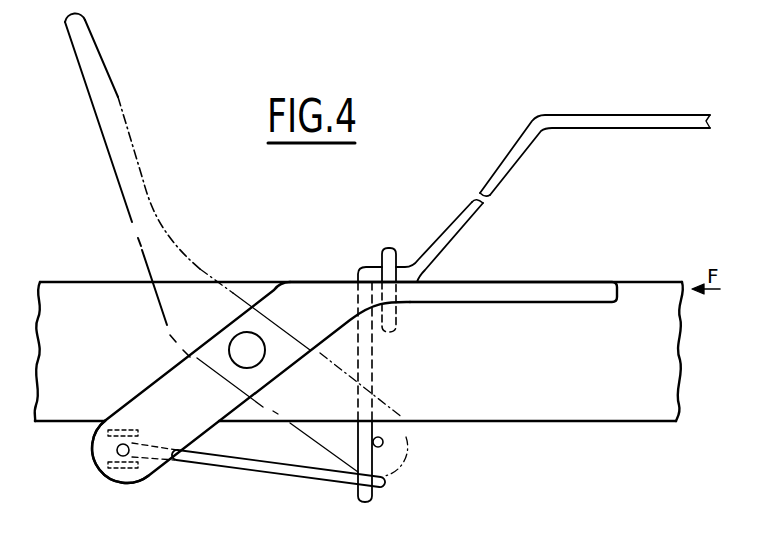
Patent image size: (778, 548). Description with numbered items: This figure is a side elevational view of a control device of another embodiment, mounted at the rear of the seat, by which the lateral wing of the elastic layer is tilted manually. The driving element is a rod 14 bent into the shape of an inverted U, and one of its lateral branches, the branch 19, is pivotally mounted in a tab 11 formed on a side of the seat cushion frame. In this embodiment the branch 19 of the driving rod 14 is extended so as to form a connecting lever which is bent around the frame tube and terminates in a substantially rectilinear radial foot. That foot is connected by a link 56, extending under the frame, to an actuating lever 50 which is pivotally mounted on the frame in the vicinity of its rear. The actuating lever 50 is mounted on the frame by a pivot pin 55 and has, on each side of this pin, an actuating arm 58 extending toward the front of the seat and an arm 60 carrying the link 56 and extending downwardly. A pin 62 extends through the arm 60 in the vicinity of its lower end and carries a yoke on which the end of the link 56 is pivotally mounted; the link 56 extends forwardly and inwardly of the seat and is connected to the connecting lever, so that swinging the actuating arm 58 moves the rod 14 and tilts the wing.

The tab 11 is at (380, 263).
The driving element rod 14 is at (592, 112).
The lateral branch 19 is at (508, 157).
The actuating lever 50 is at (294, 297).
The pivot pin 55 is at (244, 340).
The link 56 is at (262, 468).
The actuating arm 58 is at (110, 96).
The arm 60 is at (150, 398).
The pin 62 is at (118, 455).